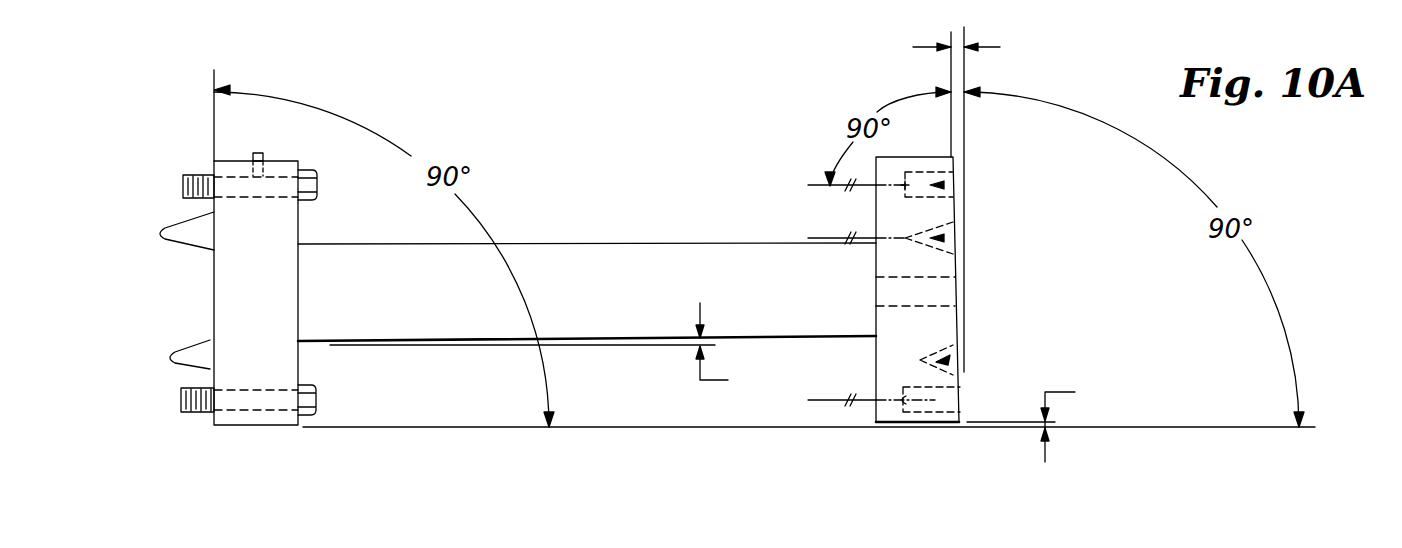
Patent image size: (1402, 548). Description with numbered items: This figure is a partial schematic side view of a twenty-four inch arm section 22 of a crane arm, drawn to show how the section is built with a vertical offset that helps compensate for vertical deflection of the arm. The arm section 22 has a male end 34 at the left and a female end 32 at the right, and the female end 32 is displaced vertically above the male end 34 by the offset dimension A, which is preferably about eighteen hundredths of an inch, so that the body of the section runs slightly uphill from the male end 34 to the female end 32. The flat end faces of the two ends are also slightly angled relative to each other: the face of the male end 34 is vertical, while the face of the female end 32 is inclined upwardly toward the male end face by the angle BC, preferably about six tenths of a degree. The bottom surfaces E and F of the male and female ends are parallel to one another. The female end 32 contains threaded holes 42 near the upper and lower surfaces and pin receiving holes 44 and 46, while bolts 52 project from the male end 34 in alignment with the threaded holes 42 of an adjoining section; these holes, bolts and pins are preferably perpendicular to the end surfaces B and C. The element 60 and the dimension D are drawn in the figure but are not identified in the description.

The arm section 22 is at (682, 228).
The female end 32 is at (958, 378).
The male end 34 is at (212, 161).
The threaded holes 42 is at (960, 186).
The pin receiving hole 44 is at (962, 238).
The pin receiving hole 46 is at (958, 355).
The bolts 52 is at (182, 412).
The set screw 60 is at (258, 152).
The offset dimension A is at (1032, 419).
The surface B is at (212, 292).
The angle BC is at (977, 49).
The surface C is at (958, 262).
The deflection D is at (724, 351).
The bottom surface E is at (252, 426).
The bottom surface F is at (905, 424).